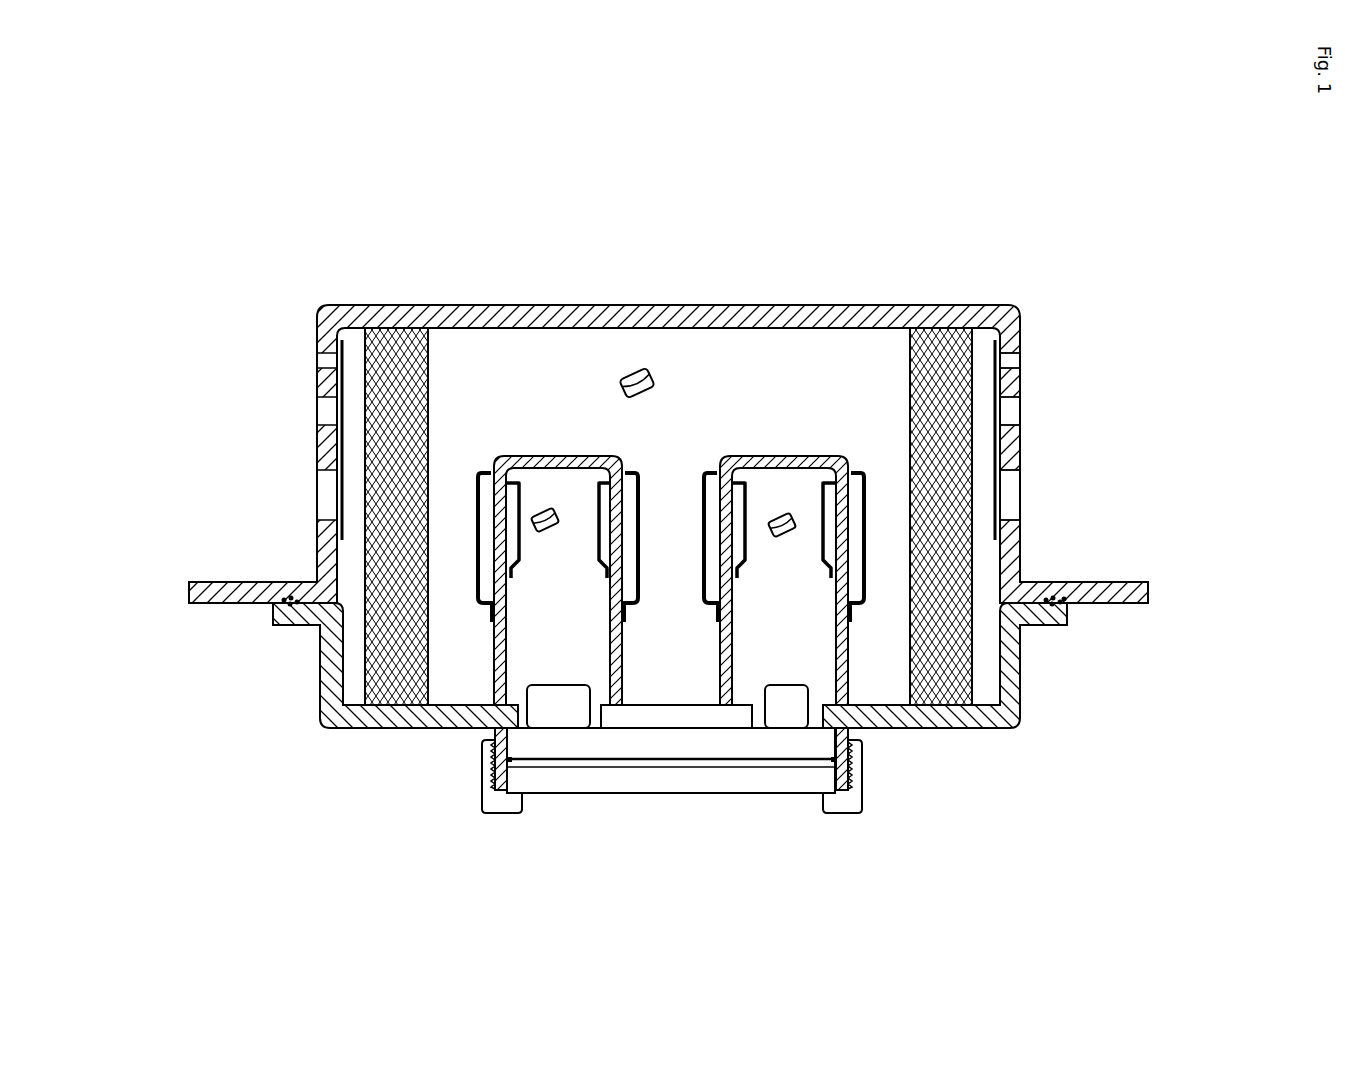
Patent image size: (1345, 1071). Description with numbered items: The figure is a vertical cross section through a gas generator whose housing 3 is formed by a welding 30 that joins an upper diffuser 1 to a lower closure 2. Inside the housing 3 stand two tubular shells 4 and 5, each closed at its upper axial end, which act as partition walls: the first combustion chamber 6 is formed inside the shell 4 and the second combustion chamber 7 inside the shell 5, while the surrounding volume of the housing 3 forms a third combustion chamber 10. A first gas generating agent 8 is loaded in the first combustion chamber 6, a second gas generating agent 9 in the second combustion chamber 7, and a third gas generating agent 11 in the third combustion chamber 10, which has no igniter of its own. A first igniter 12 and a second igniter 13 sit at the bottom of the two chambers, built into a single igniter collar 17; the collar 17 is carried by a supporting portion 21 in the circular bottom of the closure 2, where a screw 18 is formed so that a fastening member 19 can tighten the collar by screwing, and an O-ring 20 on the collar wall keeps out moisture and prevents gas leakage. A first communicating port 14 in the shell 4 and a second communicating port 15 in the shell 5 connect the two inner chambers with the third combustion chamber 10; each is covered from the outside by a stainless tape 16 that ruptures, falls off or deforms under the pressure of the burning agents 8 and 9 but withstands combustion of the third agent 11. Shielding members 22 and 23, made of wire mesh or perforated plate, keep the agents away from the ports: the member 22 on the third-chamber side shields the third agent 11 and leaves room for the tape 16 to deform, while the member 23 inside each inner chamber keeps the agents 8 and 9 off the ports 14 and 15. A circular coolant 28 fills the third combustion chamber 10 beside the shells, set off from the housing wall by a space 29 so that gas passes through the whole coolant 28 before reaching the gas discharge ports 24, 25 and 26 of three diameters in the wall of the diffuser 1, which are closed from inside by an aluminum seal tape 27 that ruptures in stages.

The diffuser 1 is at (1120, 588).
The closure 2 is at (1058, 620).
The housing 3 is at (715, 516).
The tubular shell 4 is at (622, 683).
The tubular shell 5 is at (846, 678).
The first combustion chamber 6 is at (586, 580).
The second combustion chamber 7 is at (811, 580).
The first gas generating agent 8 is at (546, 510).
The second gas generating agent 9 is at (782, 512).
The third combustion chamber 10 is at (685, 311).
The third gas generating agent 11 is at (637, 372).
The first igniter 12 is at (567, 717).
The second igniter 13 is at (783, 717).
The first communicating port 14 is at (505, 520).
The second communicating port 15 is at (747, 540).
The tape 16 is at (712, 508).
The igniter collar 17 is at (665, 778).
The screw 18 is at (853, 767).
The fastening member 19 is at (858, 803).
The O-ring 20 is at (512, 762).
The supporting portion 21 is at (492, 735).
The shielding member 22 is at (483, 473).
The shielding member 23 is at (597, 497).
The gas discharge port 24 is at (1012, 495).
The gas discharge port 25 is at (1015, 410).
The gas discharge port 26 is at (1014, 363).
The aluminum seal tape 27 is at (990, 372).
The coolant 28 is at (935, 343).
The space 29 is at (355, 343).
The welding 30 is at (290, 612).